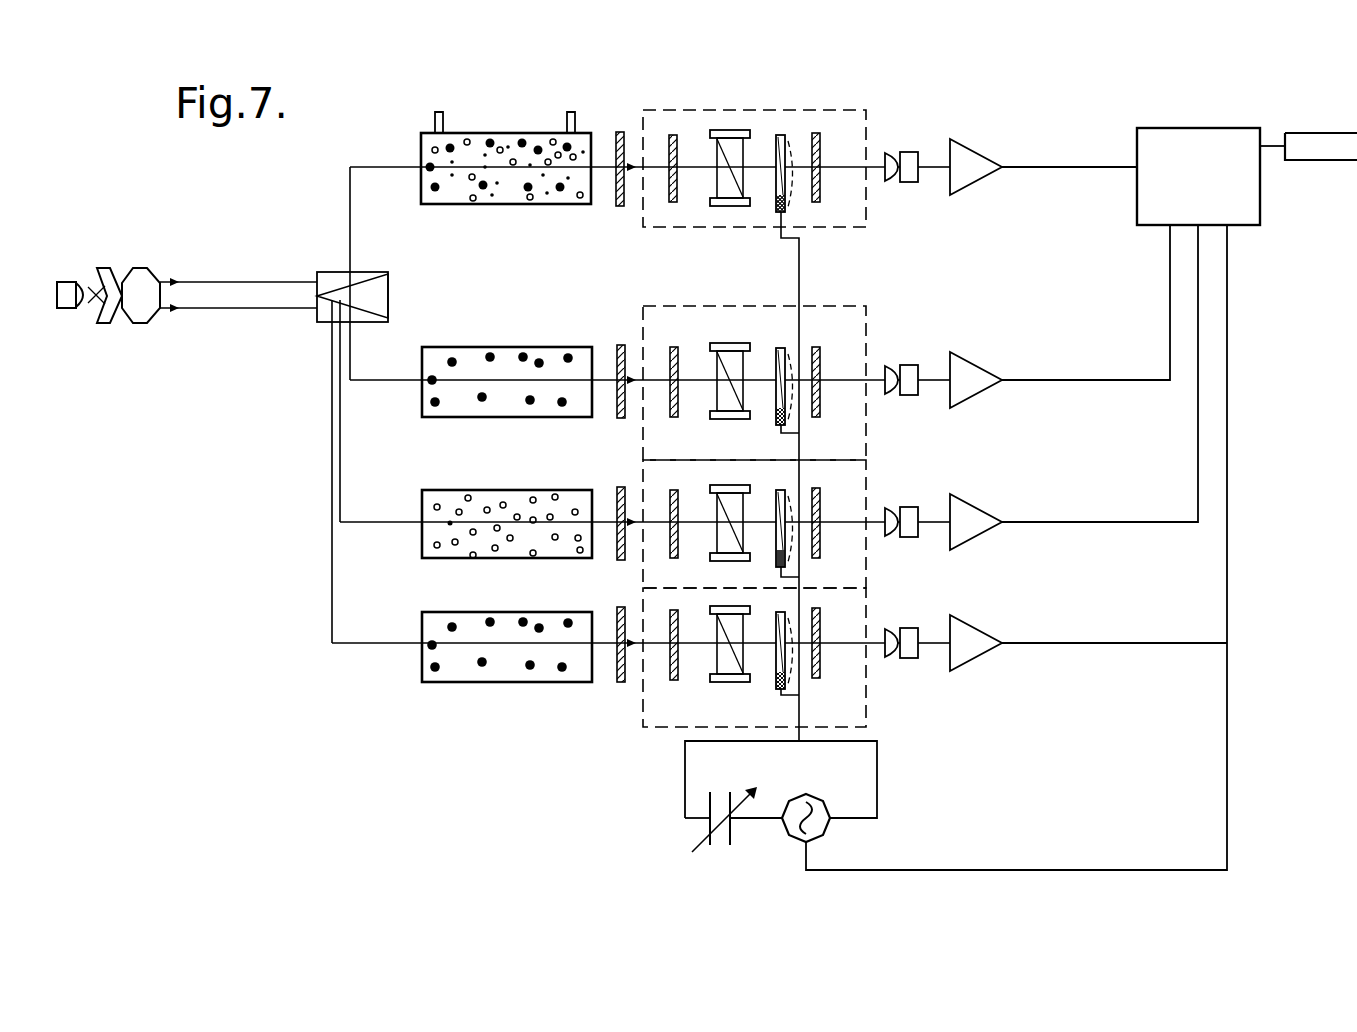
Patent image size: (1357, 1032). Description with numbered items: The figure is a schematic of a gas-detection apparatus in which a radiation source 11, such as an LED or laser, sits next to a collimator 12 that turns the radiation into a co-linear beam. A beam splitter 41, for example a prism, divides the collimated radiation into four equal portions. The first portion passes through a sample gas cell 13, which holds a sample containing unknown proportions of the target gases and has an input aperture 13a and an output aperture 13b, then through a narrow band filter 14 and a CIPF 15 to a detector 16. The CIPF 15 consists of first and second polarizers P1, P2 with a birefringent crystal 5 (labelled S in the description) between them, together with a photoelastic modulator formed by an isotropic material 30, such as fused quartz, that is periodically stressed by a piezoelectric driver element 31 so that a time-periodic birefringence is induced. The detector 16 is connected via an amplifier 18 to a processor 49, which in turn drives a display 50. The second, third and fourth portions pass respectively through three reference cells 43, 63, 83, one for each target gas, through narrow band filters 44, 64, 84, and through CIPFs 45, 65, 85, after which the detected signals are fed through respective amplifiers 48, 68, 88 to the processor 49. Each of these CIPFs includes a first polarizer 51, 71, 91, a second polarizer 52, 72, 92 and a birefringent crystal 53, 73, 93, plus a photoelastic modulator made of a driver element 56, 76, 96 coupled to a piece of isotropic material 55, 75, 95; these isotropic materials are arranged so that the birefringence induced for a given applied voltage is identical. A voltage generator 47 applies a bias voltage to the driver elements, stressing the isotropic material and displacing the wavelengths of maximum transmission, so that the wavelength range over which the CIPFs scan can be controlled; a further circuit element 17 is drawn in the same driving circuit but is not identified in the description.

The radiation source 11 is at (66, 281).
The collimator 12 is at (155, 265).
The beam splitter 41 is at (388, 297).
The sample gas cell 13 is at (474, 205).
The input aperture 13a is at (439, 108).
The output aperture 13b is at (571, 111).
The narrow band filter 14 is at (619, 208).
The CIPF 15 is at (828, 110).
The first polarizer P1 is at (674, 205).
The birefringent crystal 5 is at (721, 208).
The isotropic material 30 is at (778, 134).
The piezoelectric driver element 31 is at (777, 211).
The second polarizer P2 is at (818, 204).
The detector 16 is at (909, 152).
The amplifier 18 is at (977, 150).
The processor 49 is at (1216, 128).
The display 50 is at (1338, 132).
The reference cell 43 is at (478, 418).
The narrow band filter 44 is at (619, 420).
The CIPF 45 is at (866, 338).
The first polarizer 51 is at (673, 347).
The birefringent crystal 53 is at (726, 343).
The isotropic material 55 is at (782, 348).
The driver element 56 is at (775, 431).
The second polarizer 52 is at (820, 353).
The amplifier 48 is at (978, 366).
The reference cell 63 is at (478, 559).
The narrow band filter 64 is at (619, 562).
The CIPF 65 is at (866, 481).
The first polarizer 71 is at (671, 492).
The birefringent crystal 73 is at (719, 484).
The isotropic material 75 is at (786, 492).
The driver element 76 is at (780, 569).
The second polarizer 72 is at (820, 498).
The amplifier 68 is at (978, 508).
The reference cell 83 is at (478, 683).
The narrow band filter 84 is at (619, 684).
The CIPF 85 is at (866, 700).
The first polarizer 91 is at (674, 682).
The birefringent crystal 93 is at (730, 683).
The isotropic material 95 is at (783, 611).
The driver element 96 is at (781, 686).
The second polarizer 92 is at (819, 630).
The amplifier 88 is at (978, 630).
The voltage generator 47 is at (728, 838).
The oscillator 17 is at (822, 839).